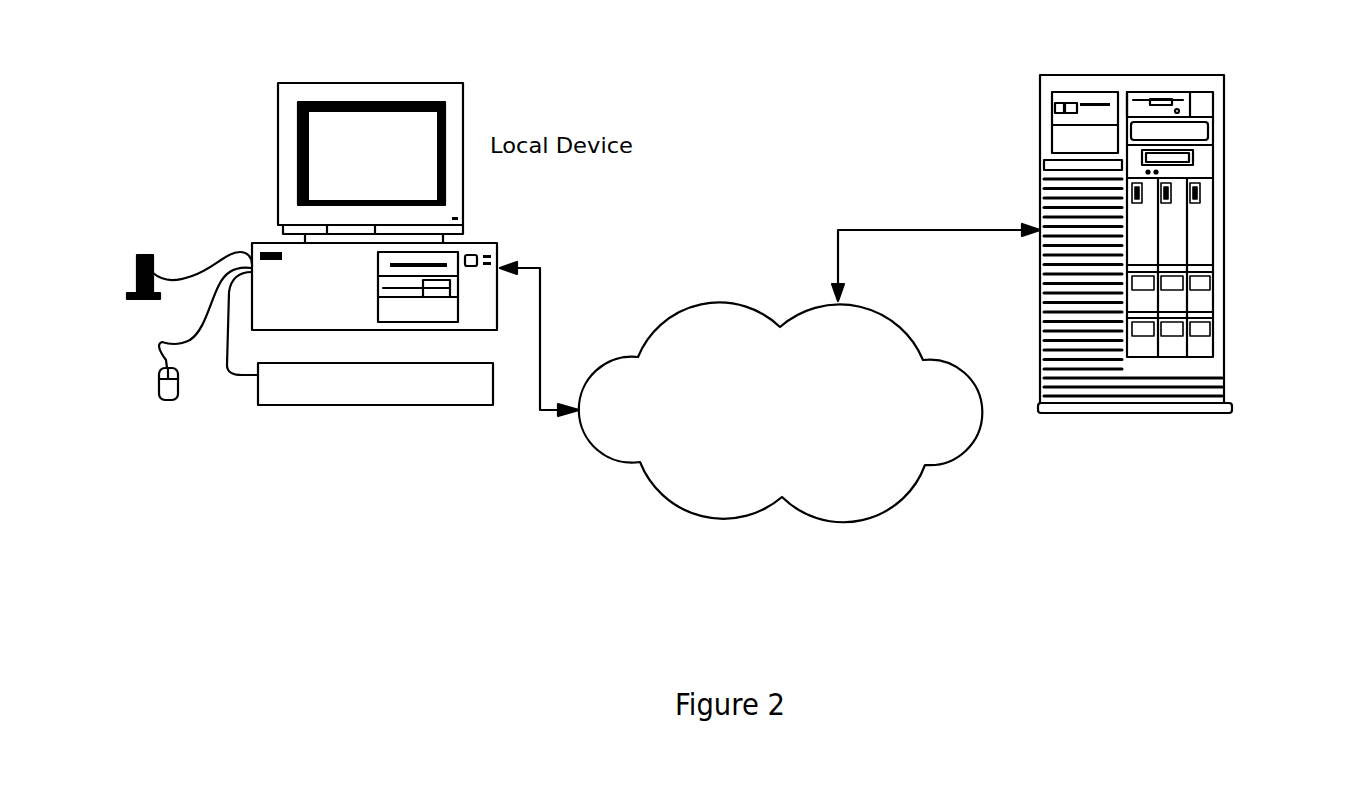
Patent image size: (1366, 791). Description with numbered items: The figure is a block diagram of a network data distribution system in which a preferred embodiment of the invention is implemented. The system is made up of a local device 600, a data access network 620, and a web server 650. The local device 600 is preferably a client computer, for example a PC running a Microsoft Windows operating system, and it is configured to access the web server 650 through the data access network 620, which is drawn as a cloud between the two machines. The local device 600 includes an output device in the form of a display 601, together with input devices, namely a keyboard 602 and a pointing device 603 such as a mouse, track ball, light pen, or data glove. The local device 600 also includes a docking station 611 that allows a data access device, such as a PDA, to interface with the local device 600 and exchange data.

The local device 600 is at (280, 243).
The display 601 is at (278, 121).
The keyboard 602 is at (423, 405).
The pointing device 603 is at (177, 400).
The docking station 611 is at (137, 257).
The data access network 620 is at (718, 302).
The web server 650 is at (1232, 197).